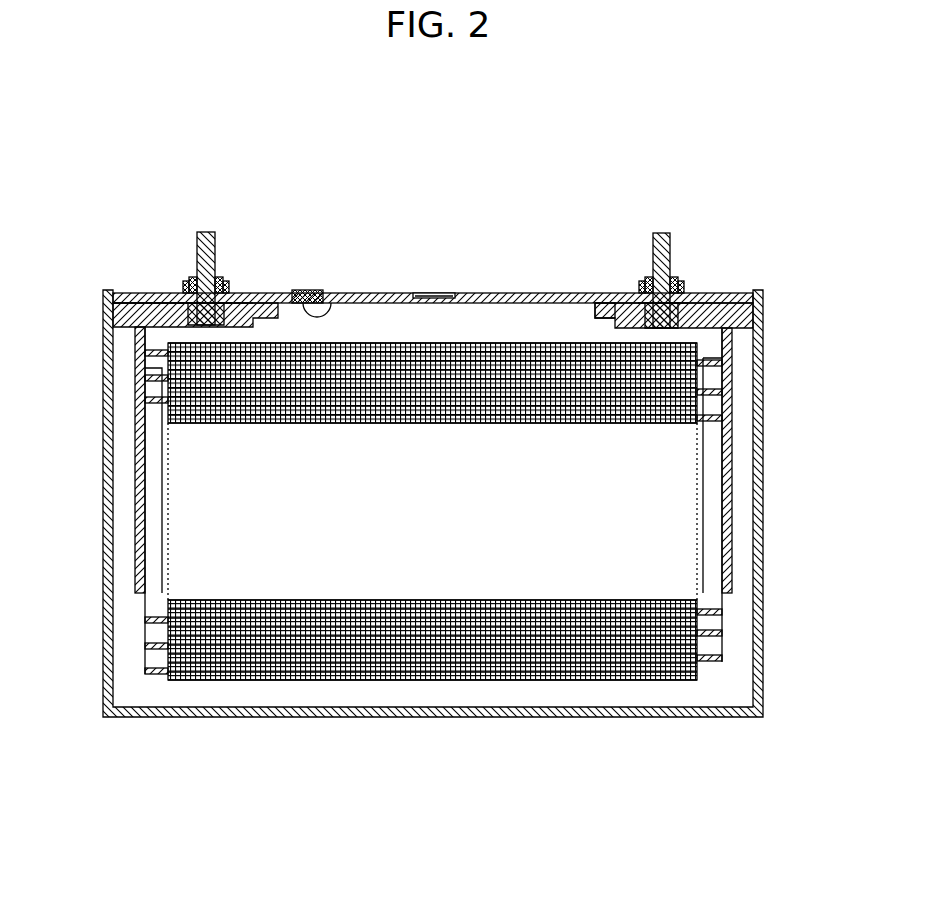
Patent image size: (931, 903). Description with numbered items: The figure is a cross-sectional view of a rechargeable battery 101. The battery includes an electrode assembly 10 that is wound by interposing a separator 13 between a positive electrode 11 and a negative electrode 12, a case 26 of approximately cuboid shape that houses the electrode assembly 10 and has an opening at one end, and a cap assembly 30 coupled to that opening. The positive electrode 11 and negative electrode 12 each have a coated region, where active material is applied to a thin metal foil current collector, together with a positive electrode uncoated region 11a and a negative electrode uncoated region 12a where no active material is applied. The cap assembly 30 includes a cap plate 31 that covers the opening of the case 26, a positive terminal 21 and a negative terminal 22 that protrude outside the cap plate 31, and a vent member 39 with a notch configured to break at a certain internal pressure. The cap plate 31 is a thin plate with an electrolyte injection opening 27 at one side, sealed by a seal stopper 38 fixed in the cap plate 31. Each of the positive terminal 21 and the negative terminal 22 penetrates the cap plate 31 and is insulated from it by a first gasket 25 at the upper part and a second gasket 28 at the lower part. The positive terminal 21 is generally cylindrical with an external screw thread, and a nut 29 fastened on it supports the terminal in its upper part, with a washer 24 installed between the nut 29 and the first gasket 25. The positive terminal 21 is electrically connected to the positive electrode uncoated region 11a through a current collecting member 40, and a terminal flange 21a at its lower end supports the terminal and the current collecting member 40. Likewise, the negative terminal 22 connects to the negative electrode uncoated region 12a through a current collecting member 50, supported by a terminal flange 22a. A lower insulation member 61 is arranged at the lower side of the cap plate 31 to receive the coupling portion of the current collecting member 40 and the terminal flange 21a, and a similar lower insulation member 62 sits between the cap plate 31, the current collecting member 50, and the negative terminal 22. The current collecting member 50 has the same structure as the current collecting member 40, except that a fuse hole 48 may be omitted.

The rechargeable battery 101 is at (450, 164).
The electrode assembly 10 is at (432, 563).
The positive electrode 11 is at (275, 678).
The positive electrode uncoated region 11a is at (149, 676).
The negative electrode 12 is at (322, 676).
The negative electrode uncoated region 12a is at (708, 664).
The separator 13 is at (428, 655).
The positive terminal 21 is at (206, 232).
The terminal flange 21a is at (150, 298).
The negative terminal 22 is at (653, 247).
The terminal flange 22a is at (613, 325).
The washer 24 is at (226, 300).
The first gasket 25 is at (189, 284).
The case 26 is at (763, 449).
The electrolyte injection opening 27 is at (320, 315).
The second gasket 28 is at (190, 302).
The nut 29 is at (195, 278).
The cap assembly 30 is at (433, 256).
The cap plate 31 is at (512, 293).
The seal stopper 38 is at (306, 290).
The vent member 39 is at (426, 293).
The current collecting member 40 is at (137, 482).
The fuse hole 48 is at (158, 335).
The current collecting member 50 is at (731, 501).
The lower insulation member 61 is at (117, 316).
The lower insulation member 62 is at (755, 318).